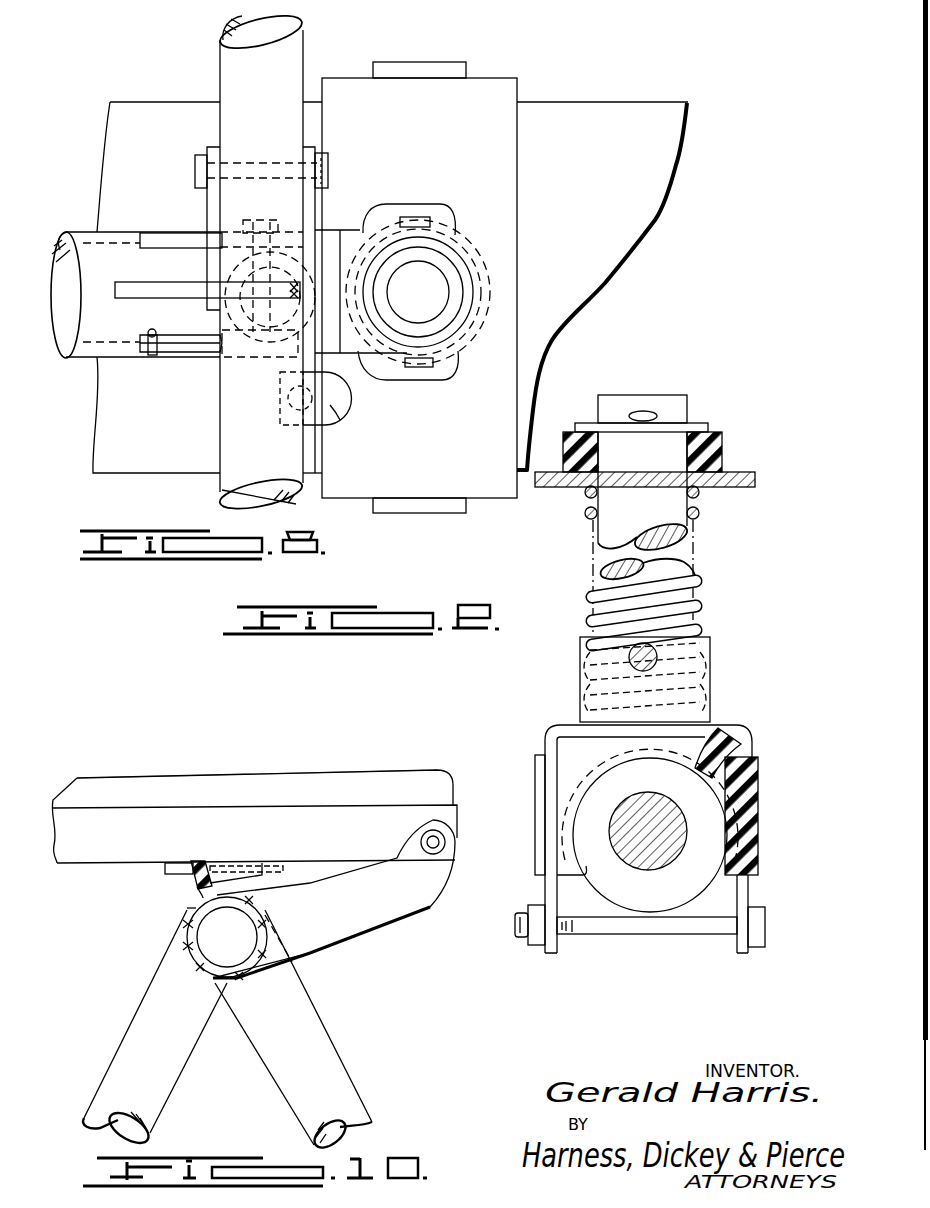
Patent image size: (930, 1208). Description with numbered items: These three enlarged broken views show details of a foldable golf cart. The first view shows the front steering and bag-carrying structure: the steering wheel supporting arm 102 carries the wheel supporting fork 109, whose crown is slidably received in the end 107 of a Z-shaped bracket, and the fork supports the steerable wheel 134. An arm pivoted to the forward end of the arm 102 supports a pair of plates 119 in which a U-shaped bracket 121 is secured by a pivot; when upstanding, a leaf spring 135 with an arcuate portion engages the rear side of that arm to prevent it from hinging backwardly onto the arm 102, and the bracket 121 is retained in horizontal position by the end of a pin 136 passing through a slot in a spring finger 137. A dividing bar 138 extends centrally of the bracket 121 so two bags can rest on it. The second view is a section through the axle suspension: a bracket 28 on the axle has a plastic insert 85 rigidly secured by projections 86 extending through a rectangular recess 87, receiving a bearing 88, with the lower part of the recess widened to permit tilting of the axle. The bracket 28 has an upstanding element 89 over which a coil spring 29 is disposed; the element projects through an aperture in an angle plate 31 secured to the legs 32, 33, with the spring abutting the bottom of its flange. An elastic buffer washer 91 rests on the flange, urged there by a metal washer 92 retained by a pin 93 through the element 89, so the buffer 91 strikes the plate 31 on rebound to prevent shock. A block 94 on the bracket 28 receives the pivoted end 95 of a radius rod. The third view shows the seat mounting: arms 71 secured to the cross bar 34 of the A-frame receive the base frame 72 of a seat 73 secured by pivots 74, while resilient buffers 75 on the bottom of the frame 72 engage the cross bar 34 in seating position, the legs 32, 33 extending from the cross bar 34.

In FIG. 8, the wheel 134 is at (658, 163).
In FIG. 8, the U-shaped bracket 121 is at (285, 65).
In FIG. 8, the wheel supporting fork 109 is at (495, 98).
In FIG. 8, the plates 119 is at (207, 205).
In FIG. 8, the pin 136 is at (328, 168).
In FIG. 8, the end of the Z-shaped bracket 107 is at (495, 265).
In FIG. 8, the steering wheel supporting arm 102 is at (87, 328).
In FIG. 8, the dividing bar 138 is at (140, 265).
In FIG. 8, the leaf spring 135 is at (190, 353).
In FIG. 8, the spring finger 137 is at (340, 410).
In FIG. 9, the metal washer 92 is at (586, 426).
In FIG. 9, the pin 93 is at (647, 411).
In FIG. 9, the elastic buffer washer 91 is at (722, 443).
In FIG. 9, the angle plate 31 is at (738, 474).
In FIG. 9, the upstanding element 89 is at (690, 536).
In FIG. 9, the coil spring 29 is at (702, 592).
In FIG. 9, the block 94 is at (712, 640).
In FIG. 9, the end of radius rod 95 is at (600, 658).
In FIG. 9, the bracket 28 is at (742, 737).
In FIG. 9, the plastic insert 85 is at (712, 744).
In FIG. 9, the projections 86 is at (754, 770).
In FIG. 9, the rectangular recess 87 is at (752, 788).
In FIG. 9, the bearing 88 is at (668, 903).
In FIG. 10, the base frame 72 is at (288, 812).
In FIG. 10, the seat 73 is at (182, 770).
In FIG. 10, the resilient buffers 75 is at (200, 885).
In FIG. 10, the cross bar 34 is at (186, 925).
In FIG. 10, the arms 71 is at (385, 898).
In FIG. 10, the pivots 74 is at (440, 842).
In FIG. 10, the legs 32 is at (138, 1012).
In FIG. 10, the legs 33 is at (305, 1020).